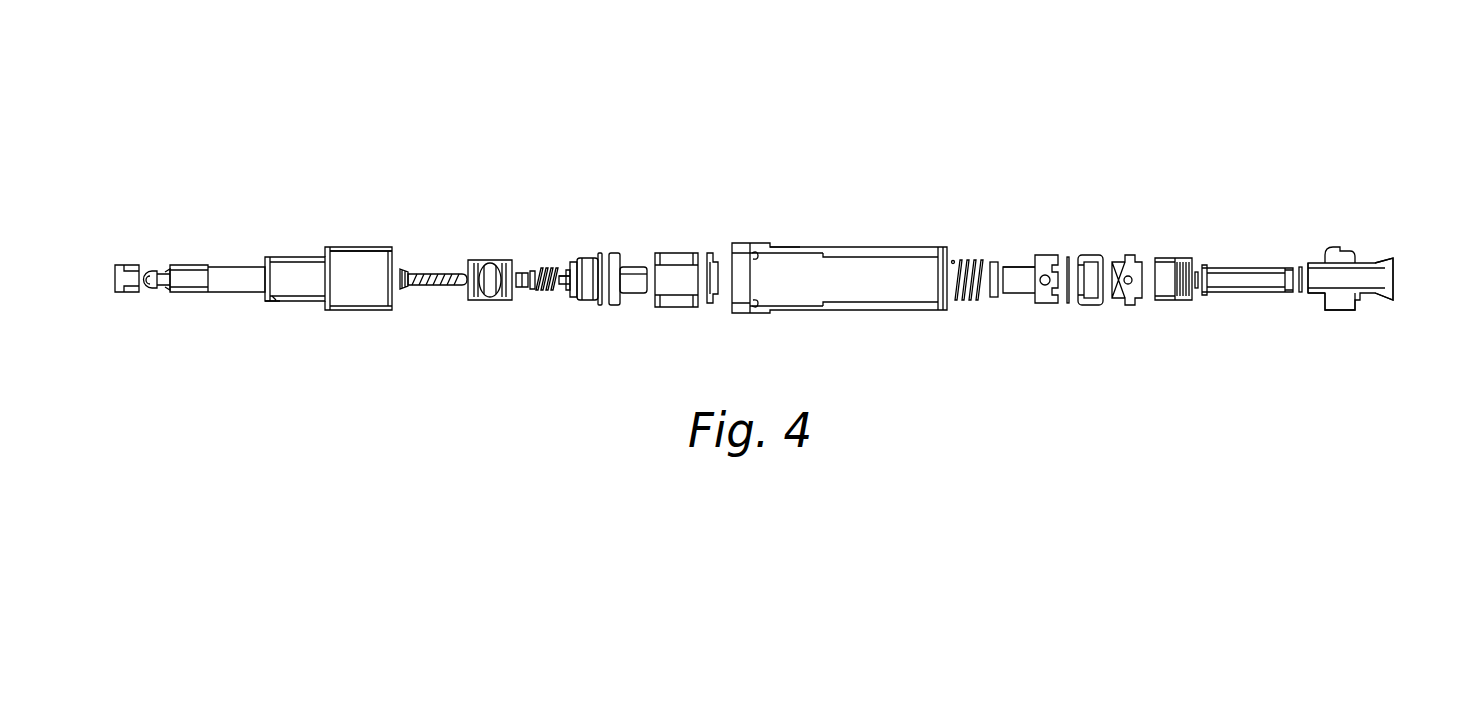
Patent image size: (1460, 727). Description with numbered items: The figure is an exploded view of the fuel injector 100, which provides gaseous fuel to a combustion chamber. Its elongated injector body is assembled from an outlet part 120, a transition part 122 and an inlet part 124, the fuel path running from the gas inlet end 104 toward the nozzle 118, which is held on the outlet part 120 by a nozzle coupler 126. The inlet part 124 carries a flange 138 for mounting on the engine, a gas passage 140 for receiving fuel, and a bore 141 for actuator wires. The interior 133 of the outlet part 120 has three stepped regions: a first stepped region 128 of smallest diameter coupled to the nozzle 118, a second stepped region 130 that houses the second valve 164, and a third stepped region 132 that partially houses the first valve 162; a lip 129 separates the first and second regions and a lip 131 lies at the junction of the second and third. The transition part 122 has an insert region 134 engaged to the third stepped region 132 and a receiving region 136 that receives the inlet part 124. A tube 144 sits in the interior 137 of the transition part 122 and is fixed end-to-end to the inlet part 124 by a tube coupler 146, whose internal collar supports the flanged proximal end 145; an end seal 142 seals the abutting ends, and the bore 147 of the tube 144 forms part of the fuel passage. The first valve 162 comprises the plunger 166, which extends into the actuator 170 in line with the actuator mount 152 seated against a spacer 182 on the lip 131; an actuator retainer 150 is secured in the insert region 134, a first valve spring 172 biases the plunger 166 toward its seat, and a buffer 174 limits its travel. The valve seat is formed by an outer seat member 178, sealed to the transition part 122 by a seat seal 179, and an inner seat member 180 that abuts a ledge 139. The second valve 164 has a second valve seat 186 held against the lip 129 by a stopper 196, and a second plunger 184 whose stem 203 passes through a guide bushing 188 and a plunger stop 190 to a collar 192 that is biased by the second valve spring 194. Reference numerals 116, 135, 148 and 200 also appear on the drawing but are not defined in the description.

The fuel injector 100 is at (782, 125).
The gas inlet end 104 is at (1394, 300).
The contact pin 116 is at (169, 265).
The nozzle 118 is at (152, 290).
The outlet part 120 is at (270, 250).
The transition part 122 is at (860, 240).
The inlet part 124 is at (1325, 320).
The nozzle coupler 126 is at (126, 264).
The first stepped region 128 is at (226, 266).
The lip 129 is at (278, 302).
The second stepped region 130 is at (316, 246).
The lip 131 is at (338, 300).
The third stepped region 132 is at (374, 310).
The interior 133 is at (297, 287).
The insert region 134 is at (742, 243).
The channel step 135 is at (830, 298).
The receiving region 136 is at (924, 247).
The interior 137 is at (798, 284).
The flange 138 is at (1353, 311).
The ledge 139 is at (742, 313).
The gas passage 140 is at (1370, 262).
The bore 141 is at (1345, 240).
The end seal 142 is at (1303, 265).
The tube 144 is at (1245, 305).
The flanged proximal end 145 is at (1296, 266).
The tube coupler 146 is at (1172, 249).
The bore 147 is at (1243, 268).
The pin 148 is at (1197, 290).
The actuator retainer 150 is at (712, 303).
The actuator mount 152 is at (613, 252).
The fuel flow valve 162 is at (1030, 381).
The second valve 164 is at (549, 432).
The plunger 166 is at (1037, 246).
The actuator 170 is at (666, 245).
The first valve spring 172 is at (967, 260).
The buffer 174 is at (991, 298).
The outer seat member 178 is at (1092, 318).
The seat seal 179 is at (1067, 304).
The inner seat member 180 is at (1126, 314).
The spacer 182 is at (595, 305).
The second plunger 184 is at (426, 312).
The second valve seat 186 is at (485, 312).
The guide bushing 188 is at (522, 271).
The plunger stop 190 is at (543, 267).
The collar 192 is at (565, 297).
The second valve spring 194 is at (545, 292).
The stopper 196 is at (580, 256).
The cable head 200 is at (404, 268).
The stem 203 is at (440, 268).